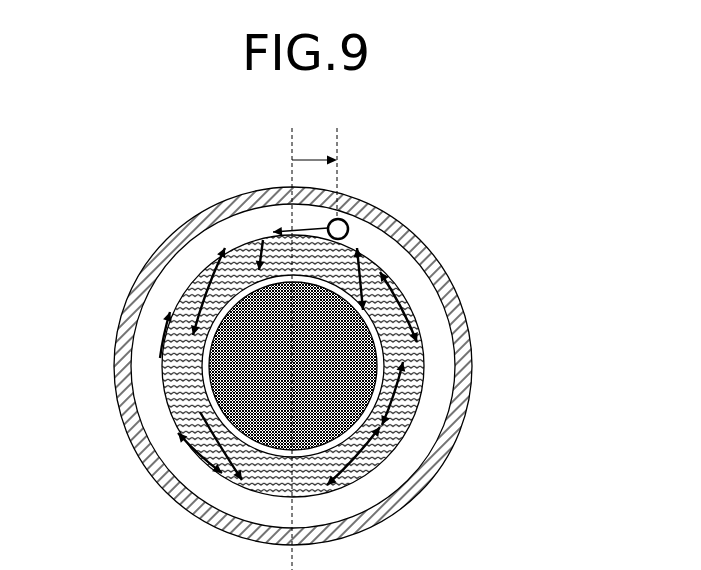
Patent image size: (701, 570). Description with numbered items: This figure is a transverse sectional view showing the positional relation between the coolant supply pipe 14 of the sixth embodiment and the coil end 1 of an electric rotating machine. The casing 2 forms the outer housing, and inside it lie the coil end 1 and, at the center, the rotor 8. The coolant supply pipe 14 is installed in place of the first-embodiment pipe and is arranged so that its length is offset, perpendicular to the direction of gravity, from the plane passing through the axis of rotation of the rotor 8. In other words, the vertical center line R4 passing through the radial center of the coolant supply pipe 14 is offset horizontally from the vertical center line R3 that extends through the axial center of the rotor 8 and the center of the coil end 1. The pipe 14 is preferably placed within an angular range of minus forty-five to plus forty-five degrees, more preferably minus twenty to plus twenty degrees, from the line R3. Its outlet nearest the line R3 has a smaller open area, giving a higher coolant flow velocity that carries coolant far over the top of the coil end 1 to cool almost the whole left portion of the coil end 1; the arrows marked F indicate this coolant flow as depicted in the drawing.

The coil end 1 is at (392, 285).
The casing 2 is at (472, 351).
The rotor 8 is at (340, 393).
The coolant supply pipe 14 is at (348, 221).
The force F is at (240, 243).
The vertical center line R3 is at (287, 332).
The vertical center line R4 is at (325, 156).